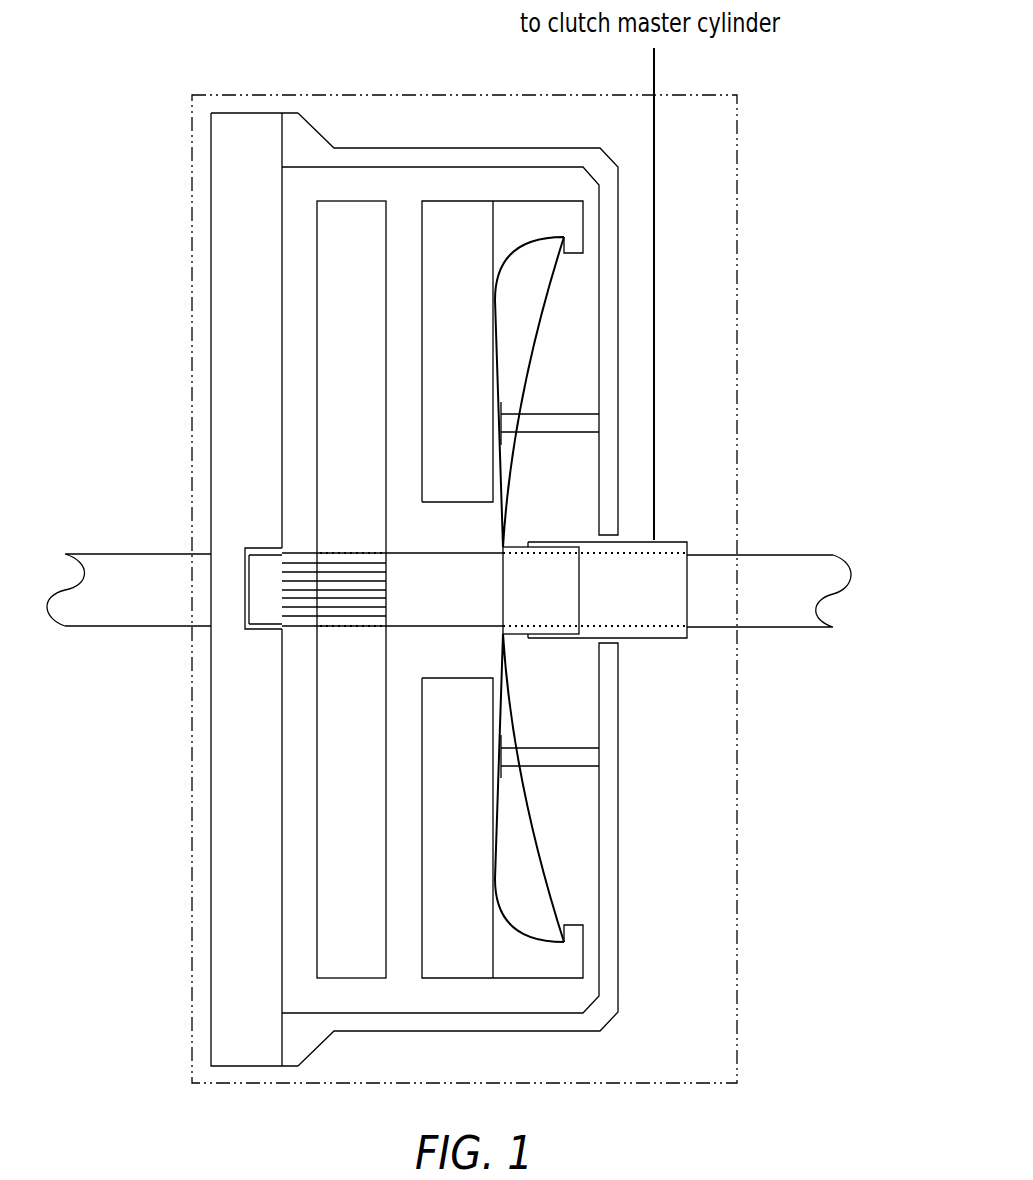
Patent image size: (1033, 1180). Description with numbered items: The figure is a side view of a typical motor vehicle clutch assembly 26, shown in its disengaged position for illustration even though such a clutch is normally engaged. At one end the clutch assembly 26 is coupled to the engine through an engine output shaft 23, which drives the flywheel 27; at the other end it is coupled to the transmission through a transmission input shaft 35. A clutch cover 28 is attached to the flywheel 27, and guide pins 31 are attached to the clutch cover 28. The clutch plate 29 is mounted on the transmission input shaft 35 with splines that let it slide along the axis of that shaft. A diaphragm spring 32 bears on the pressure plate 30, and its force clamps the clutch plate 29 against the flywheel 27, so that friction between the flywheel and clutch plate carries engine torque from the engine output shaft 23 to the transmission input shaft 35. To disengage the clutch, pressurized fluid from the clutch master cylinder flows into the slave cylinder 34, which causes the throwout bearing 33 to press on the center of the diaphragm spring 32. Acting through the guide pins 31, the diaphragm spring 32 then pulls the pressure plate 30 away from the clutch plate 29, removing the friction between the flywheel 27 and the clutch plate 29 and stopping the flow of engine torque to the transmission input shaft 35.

The engine output shaft 23 is at (275, 589).
The clutch assembly 26 is at (440, 589).
The flywheel 27 is at (254, 589).
The clutch cover 28 is at (450, 589).
The clutch plate 29 is at (351, 589).
The pressure plate 30 is at (502, 589).
The guide pins 31 is at (550, 600).
The diaphragm spring 32 is at (534, 589).
The throwout bearing 33 is at (541, 590).
The slave cylinder 34 is at (595, 590).
The transmission input shaft 35 is at (769, 591).